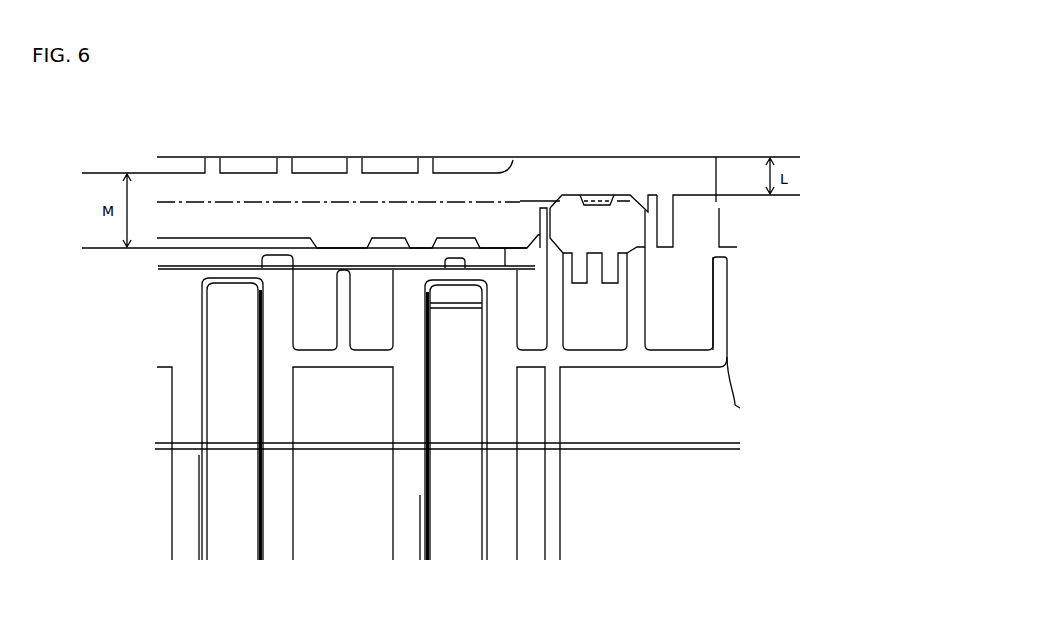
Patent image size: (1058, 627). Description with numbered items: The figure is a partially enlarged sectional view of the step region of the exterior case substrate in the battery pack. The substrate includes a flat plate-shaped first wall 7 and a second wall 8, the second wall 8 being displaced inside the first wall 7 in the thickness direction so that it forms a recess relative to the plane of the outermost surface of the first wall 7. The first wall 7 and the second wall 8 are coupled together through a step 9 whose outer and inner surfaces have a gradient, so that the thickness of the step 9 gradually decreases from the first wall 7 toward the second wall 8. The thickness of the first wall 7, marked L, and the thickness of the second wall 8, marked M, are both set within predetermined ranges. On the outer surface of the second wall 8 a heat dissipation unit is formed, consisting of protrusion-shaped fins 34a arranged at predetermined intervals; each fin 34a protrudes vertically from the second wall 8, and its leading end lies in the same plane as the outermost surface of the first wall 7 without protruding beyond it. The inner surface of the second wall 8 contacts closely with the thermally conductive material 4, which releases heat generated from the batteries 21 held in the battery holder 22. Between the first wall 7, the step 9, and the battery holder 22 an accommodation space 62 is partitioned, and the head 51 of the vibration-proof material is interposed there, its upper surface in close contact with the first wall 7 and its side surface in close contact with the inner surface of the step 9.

The second wall 8 is at (187, 217).
The fins 34a is at (453, 160).
The step 9 is at (515, 182).
The accommodation space 62 is at (565, 197).
The head 51 is at (592, 212).
The first wall 7 is at (627, 162).
The thermally conductive material 4 is at (183, 263).
The battery 21 is at (443, 507).
The battery holder 22 is at (500, 553).